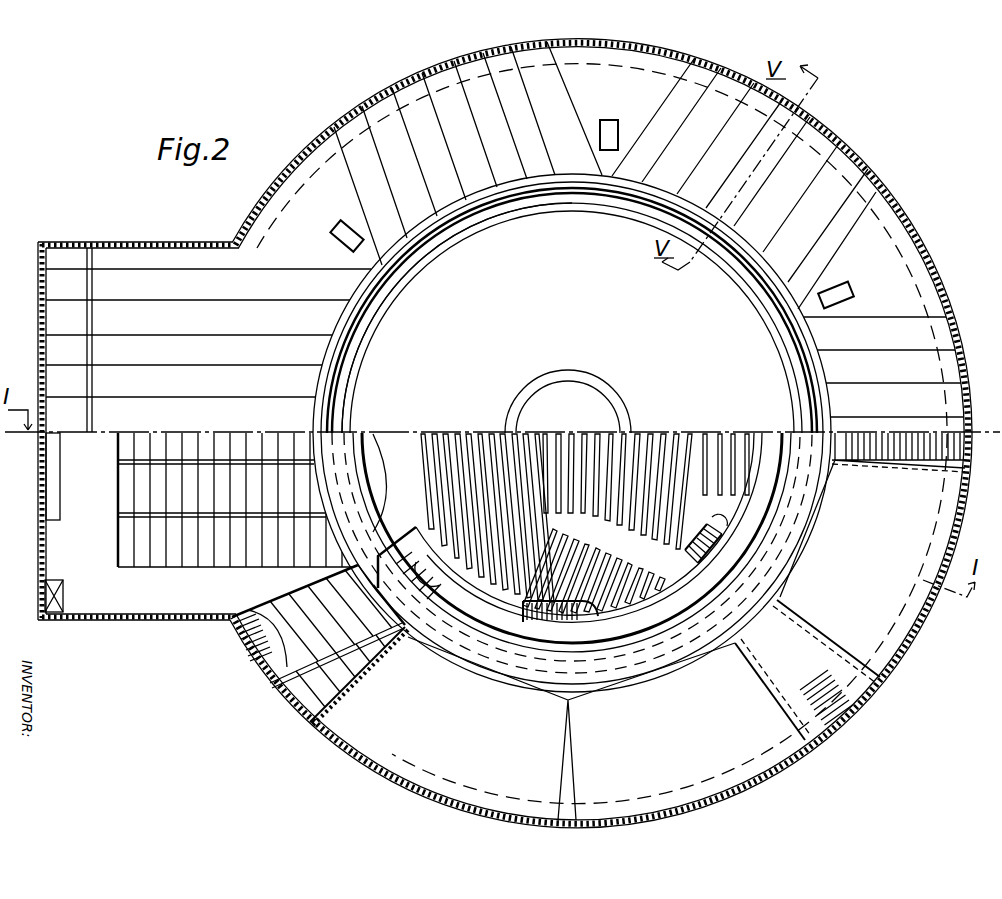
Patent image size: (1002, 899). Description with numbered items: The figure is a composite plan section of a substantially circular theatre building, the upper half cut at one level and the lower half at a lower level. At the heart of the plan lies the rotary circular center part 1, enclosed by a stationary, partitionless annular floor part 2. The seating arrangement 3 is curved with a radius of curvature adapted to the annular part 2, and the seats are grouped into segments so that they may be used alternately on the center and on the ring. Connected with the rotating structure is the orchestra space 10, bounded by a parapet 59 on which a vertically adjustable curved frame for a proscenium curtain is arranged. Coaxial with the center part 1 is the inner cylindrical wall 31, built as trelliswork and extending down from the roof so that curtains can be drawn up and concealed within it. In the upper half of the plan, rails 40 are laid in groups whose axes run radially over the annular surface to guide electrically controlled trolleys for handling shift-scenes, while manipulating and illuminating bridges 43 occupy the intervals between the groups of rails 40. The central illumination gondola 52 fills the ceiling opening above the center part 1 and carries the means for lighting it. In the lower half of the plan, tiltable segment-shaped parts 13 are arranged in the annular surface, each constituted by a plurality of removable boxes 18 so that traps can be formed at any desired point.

The center part 1 is at (732, 522).
The annular floor part 2 is at (817, 641).
The seating arrangement 3 is at (603, 622).
The orchestra space 10 is at (400, 434).
The segment-shaped parts 13 is at (775, 672).
The removable boxes 18 is at (118, 459).
The inner cylindrical wall 31 is at (352, 352).
The rails 40 is at (540, 108).
The manipulating and illuminating bridges 43 is at (608, 120).
The central illumination gondola 52 is at (557, 372).
The parapet 59 is at (455, 420).